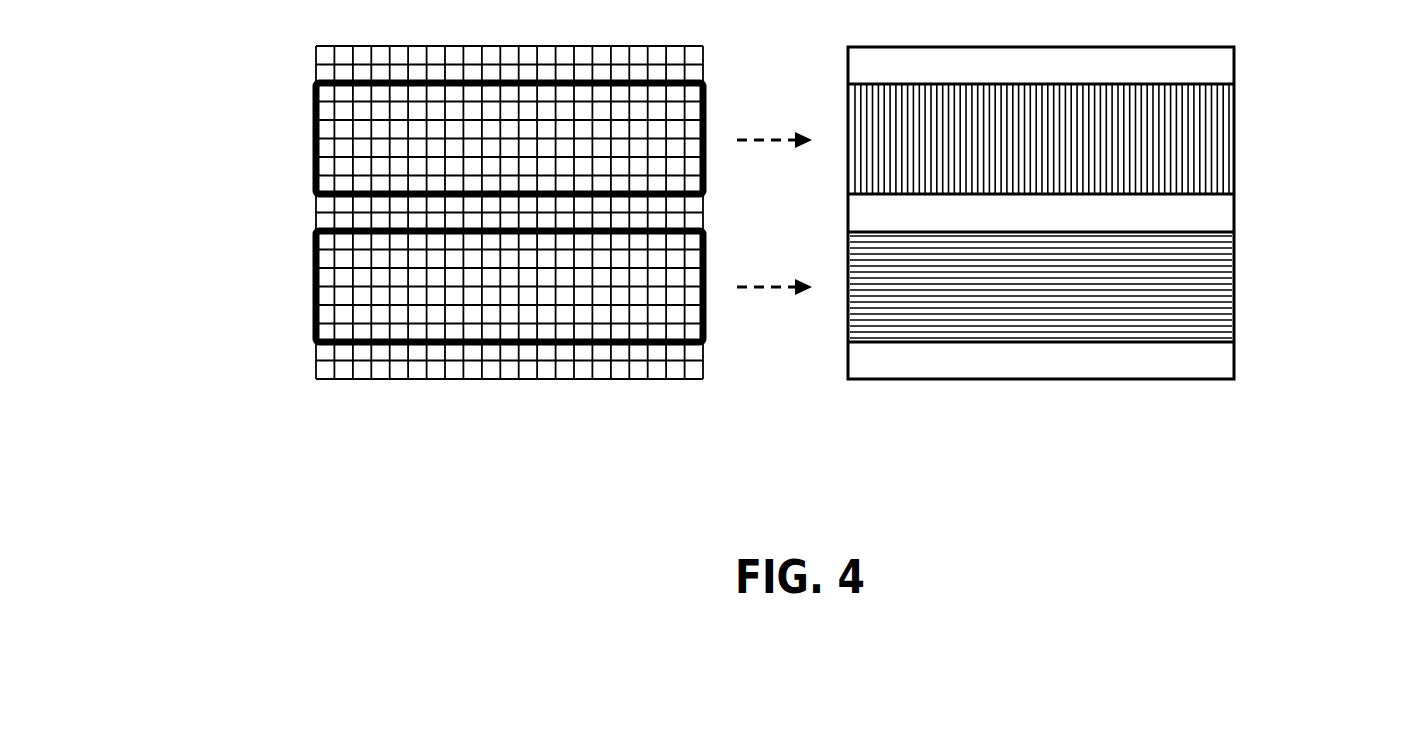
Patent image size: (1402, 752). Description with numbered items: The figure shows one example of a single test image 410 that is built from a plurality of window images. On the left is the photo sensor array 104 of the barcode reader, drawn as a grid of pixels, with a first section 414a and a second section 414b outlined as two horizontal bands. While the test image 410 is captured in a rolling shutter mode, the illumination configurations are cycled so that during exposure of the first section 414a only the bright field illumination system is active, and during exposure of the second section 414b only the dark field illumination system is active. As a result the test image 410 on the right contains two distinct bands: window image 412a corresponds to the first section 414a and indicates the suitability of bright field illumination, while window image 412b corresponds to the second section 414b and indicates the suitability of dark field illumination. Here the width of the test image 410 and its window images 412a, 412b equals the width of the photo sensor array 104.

The photo sensor array 104 is at (512, 381).
The first section 414a is at (313, 142).
The second section 414b is at (313, 289).
The test image 410 is at (1062, 381).
The window image 412a is at (1236, 140).
The window image 412b is at (1236, 285).